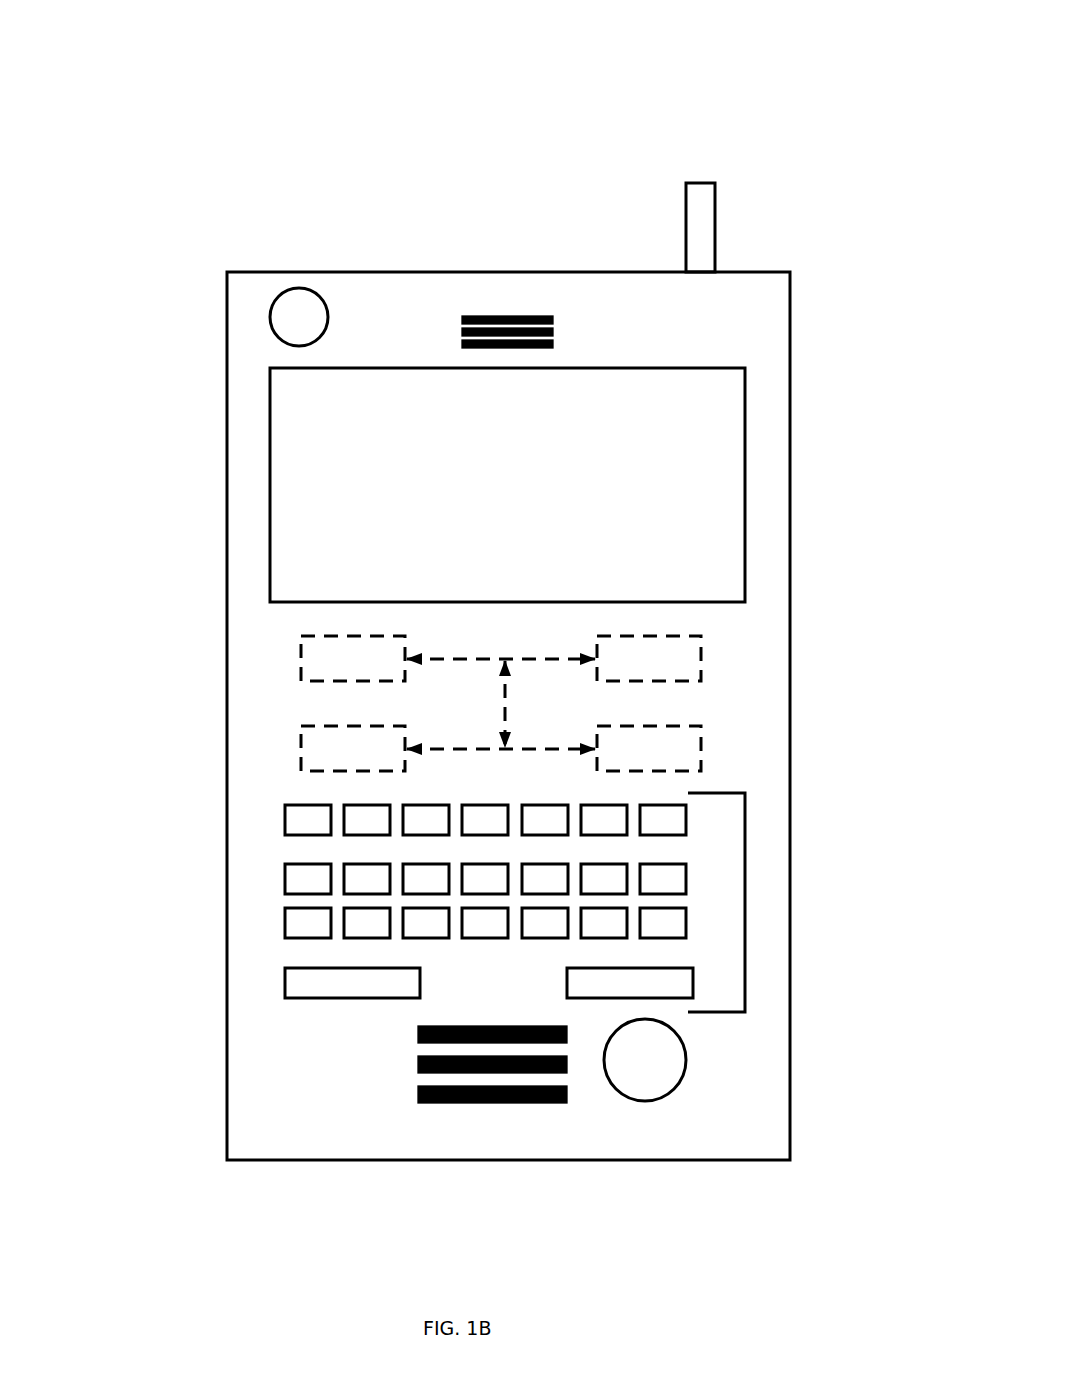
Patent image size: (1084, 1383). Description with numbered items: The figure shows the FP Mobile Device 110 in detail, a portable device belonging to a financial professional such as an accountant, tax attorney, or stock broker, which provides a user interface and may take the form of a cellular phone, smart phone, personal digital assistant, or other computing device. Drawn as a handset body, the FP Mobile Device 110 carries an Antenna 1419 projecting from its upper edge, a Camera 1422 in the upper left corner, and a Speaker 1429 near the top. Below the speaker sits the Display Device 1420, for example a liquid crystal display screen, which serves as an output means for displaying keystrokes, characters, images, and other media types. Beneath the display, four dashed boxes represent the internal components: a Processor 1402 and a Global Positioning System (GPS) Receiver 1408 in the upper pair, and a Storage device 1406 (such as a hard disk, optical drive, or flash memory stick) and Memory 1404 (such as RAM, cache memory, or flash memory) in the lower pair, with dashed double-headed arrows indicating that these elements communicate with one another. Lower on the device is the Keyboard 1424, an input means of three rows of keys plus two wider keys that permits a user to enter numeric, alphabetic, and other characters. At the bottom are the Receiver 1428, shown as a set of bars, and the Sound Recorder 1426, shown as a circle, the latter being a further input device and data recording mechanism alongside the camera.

The FP Mobile Device 110 is at (579, 126).
The Antenna 1419 is at (701, 226).
The Camera 1422 is at (269, 316).
The Speaker 1429 is at (504, 314).
The Display Device 1420 is at (718, 522).
The Processor 1402 is at (299, 656).
The Global Positioning System (GPS) Receiver 1408 is at (701, 656).
The Storage device 1406 is at (299, 746).
The Memory 1404 is at (701, 746).
The Keyboard 1424 is at (749, 892).
The Sound Recorder 1426 is at (647, 1061).
The Receiver 1428 is at (492, 1103).